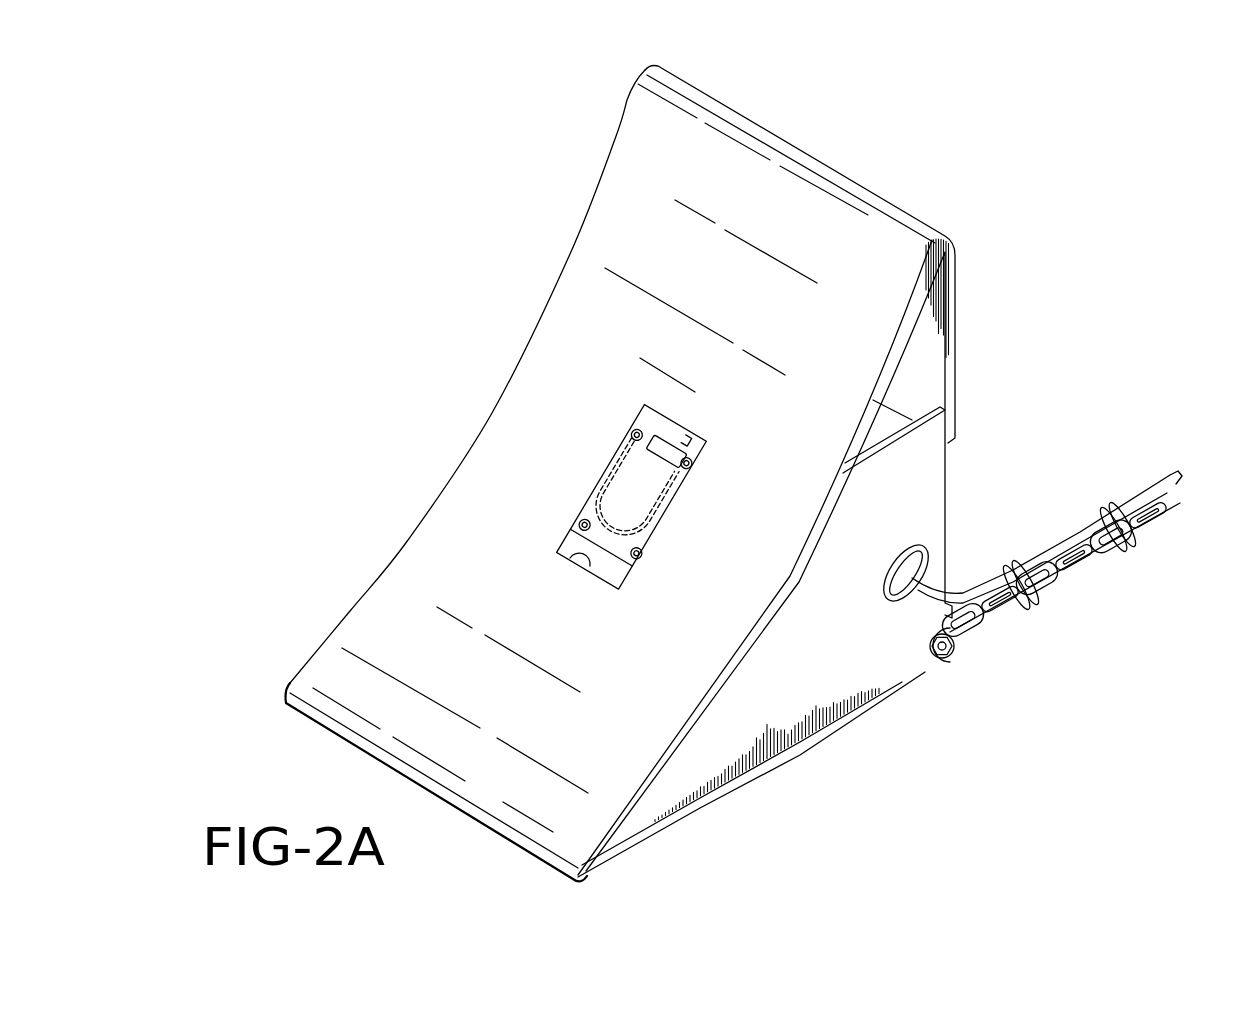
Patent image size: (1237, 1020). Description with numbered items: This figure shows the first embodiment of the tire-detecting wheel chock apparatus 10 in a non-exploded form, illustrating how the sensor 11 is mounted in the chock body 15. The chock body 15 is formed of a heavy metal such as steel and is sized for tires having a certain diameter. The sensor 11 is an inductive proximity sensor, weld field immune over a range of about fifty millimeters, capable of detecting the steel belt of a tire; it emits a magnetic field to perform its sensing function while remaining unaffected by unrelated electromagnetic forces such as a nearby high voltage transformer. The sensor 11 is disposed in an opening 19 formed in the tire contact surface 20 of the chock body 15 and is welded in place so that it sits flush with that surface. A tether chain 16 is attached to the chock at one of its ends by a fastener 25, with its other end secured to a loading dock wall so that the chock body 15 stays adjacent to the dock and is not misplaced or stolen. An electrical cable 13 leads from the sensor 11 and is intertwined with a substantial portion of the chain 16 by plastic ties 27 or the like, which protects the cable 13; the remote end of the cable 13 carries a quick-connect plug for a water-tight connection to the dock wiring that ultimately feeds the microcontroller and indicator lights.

The tire-detecting wheel chock apparatus 10 is at (1078, 207).
The sensor 11 is at (618, 566).
The electrical cable 13 is at (1043, 549).
The chock body 15 is at (812, 144).
The tether chain 16 is at (1058, 582).
The opening 19 is at (565, 557).
The tire contact surface 20 is at (372, 637).
The fastener 25 is at (950, 655).
The plastic ties 27 is at (1103, 512).